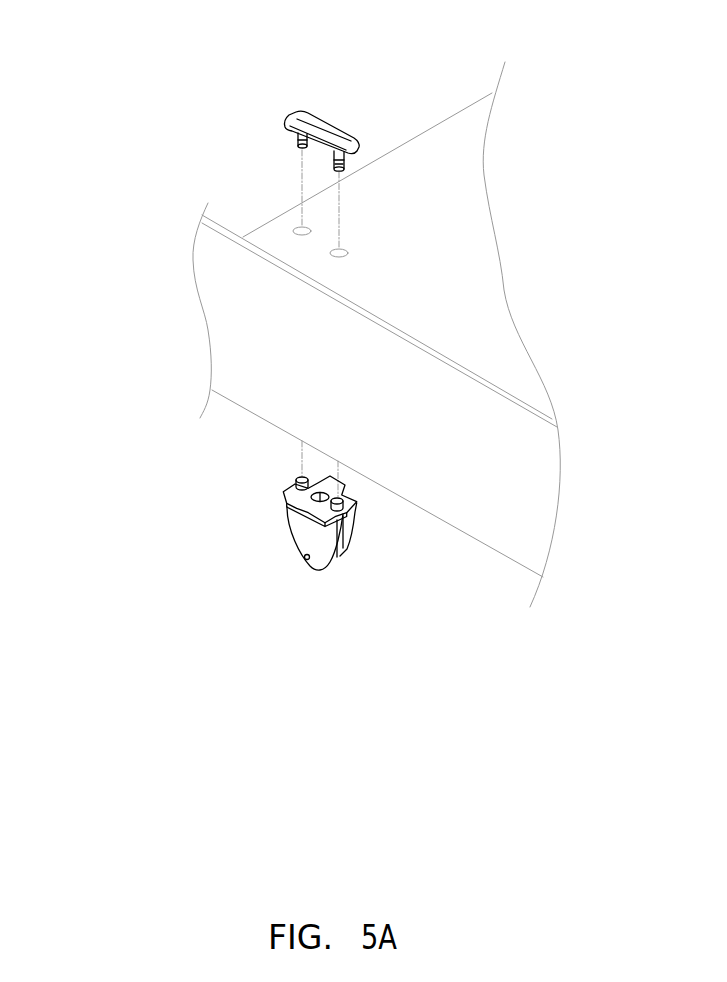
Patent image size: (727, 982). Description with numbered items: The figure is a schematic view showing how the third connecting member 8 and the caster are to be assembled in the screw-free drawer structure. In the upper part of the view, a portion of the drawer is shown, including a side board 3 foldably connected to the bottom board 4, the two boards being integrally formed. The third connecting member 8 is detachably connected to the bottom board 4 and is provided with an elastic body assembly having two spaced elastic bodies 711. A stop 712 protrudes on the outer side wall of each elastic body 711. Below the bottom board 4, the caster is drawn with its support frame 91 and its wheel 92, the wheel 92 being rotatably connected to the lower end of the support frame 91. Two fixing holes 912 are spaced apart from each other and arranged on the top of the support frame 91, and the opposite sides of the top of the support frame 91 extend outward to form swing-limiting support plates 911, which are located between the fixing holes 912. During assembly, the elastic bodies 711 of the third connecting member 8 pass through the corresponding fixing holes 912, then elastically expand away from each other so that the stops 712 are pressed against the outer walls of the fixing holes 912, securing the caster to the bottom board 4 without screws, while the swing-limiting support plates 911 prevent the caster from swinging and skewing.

The side board 3 is at (263, 361).
The bottom board 4 is at (457, 160).
The third connecting member 8 is at (240, 123).
The elastic body 711 is at (333, 155).
The stop 712 is at (333, 164).
The support frame 91 is at (207, 558).
The swing-limiting support plate 911 is at (283, 502).
The fixing hole 912 is at (295, 478).
The wheel 92 is at (303, 563).